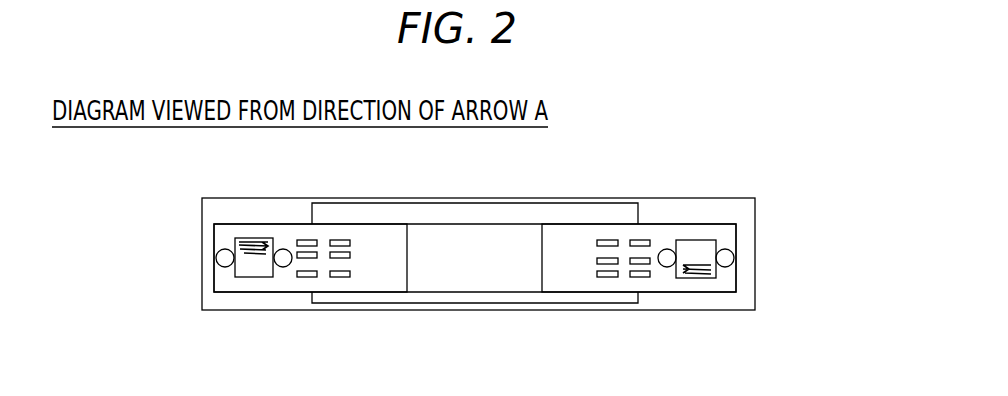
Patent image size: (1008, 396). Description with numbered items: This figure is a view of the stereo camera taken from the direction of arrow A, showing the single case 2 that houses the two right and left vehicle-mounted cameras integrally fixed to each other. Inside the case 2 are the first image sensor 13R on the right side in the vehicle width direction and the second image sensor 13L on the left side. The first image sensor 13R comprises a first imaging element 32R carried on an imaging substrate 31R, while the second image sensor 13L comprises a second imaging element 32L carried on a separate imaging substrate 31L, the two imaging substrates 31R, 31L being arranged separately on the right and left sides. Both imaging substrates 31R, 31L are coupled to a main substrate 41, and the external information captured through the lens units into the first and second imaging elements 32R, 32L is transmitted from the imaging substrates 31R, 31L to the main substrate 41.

The case 2 is at (202, 302).
The main substrate 41 is at (473, 212).
The second image sensor 13L is at (212, 238).
The first image sensor 13R is at (738, 240).
The imaging substrate 31R is at (360, 285).
The first imaging element 32R is at (257, 272).
The imaging substrate 31L is at (585, 280).
The second imaging element 32L is at (699, 272).